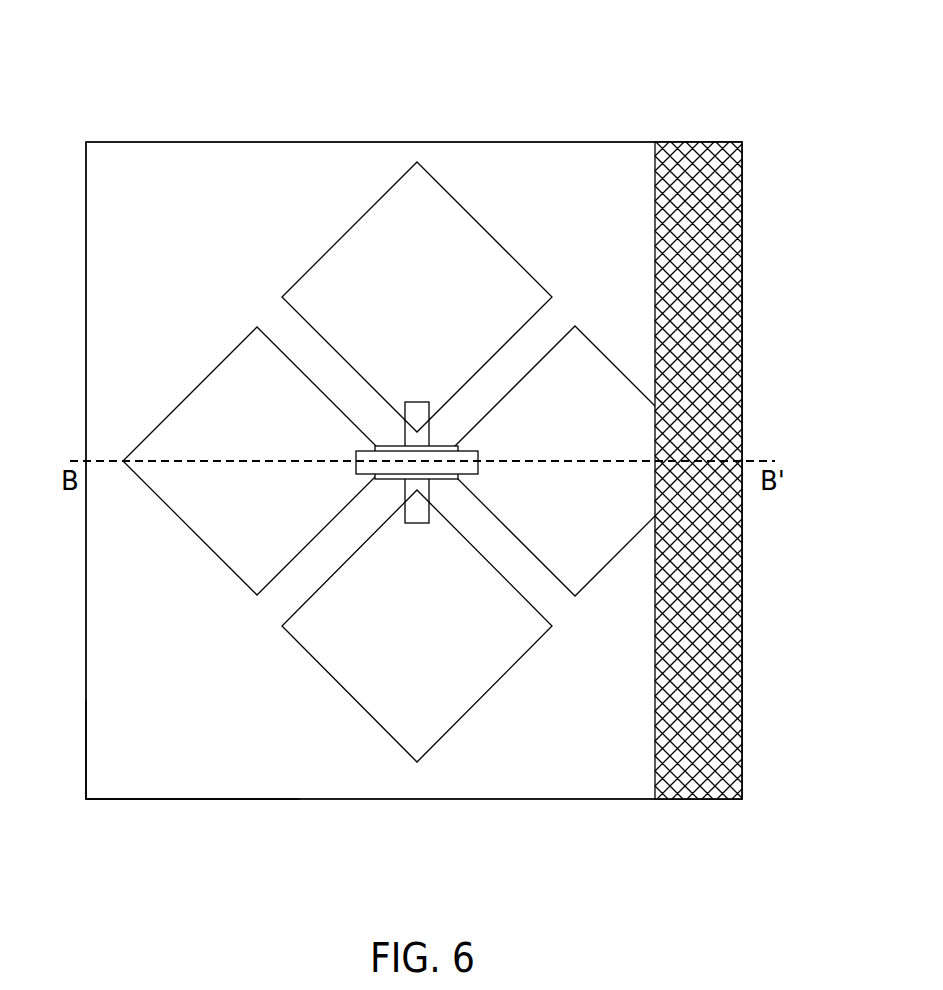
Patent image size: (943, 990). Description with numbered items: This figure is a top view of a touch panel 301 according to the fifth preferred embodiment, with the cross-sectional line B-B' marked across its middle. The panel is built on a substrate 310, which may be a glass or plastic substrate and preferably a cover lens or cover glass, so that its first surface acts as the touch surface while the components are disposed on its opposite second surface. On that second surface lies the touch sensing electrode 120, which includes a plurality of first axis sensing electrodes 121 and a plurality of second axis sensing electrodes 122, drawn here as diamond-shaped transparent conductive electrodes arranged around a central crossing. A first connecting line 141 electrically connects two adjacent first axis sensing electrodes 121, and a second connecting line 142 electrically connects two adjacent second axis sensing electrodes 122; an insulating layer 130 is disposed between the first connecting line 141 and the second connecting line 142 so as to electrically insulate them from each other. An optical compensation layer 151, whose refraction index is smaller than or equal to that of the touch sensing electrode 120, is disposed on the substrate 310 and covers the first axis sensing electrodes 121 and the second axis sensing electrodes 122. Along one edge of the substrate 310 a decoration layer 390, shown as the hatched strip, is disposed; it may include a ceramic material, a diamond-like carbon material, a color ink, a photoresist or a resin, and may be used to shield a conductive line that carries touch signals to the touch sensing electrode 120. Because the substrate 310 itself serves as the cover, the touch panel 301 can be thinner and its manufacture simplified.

The touch panel 301 is at (686, 94).
The substrate 310 is at (412, 800).
The optical compensation layer 151 is at (203, 777).
The touch sensing electrode 120 is at (398, 468).
The first axis sensing electrodes 121 is at (198, 407).
The second axis sensing electrodes 122 is at (538, 210).
The insulating layer 130 is at (458, 478).
The first connecting line 141 is at (475, 468).
The second connecting line 142 is at (417, 510).
The decoration layer 390 is at (702, 783).